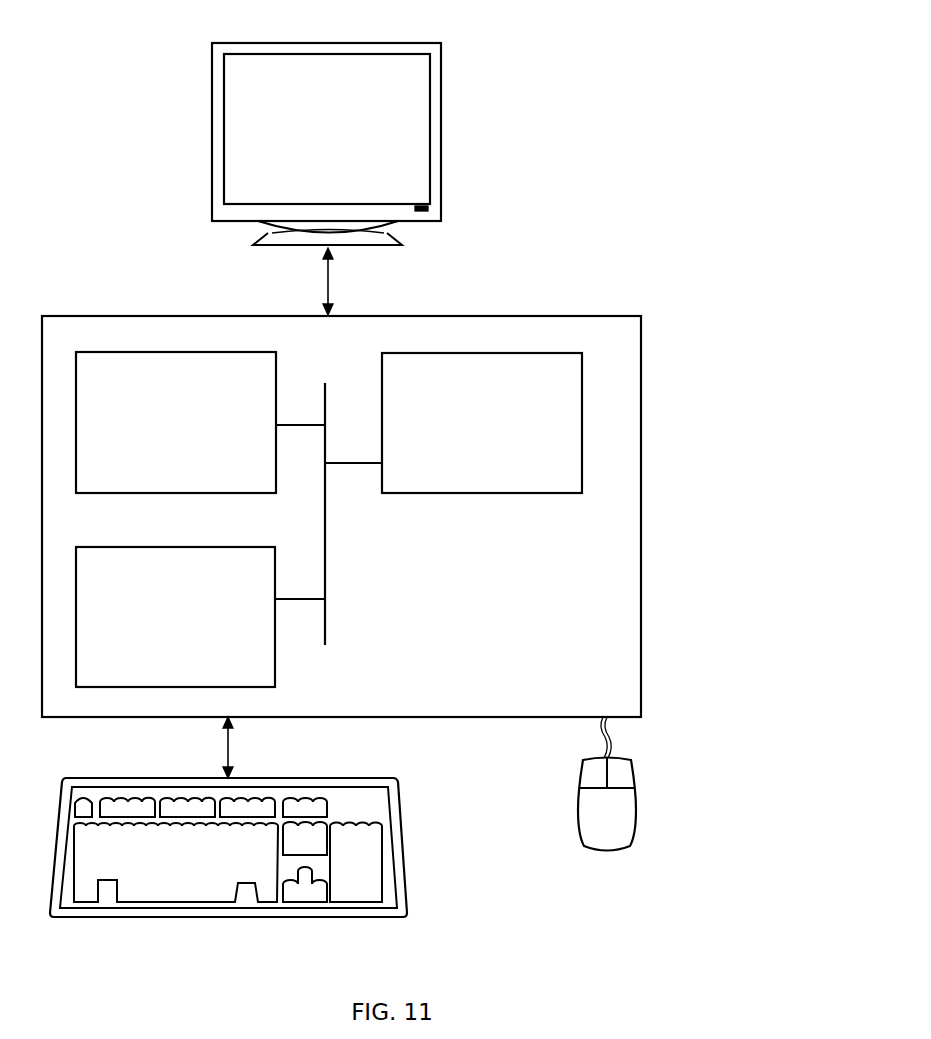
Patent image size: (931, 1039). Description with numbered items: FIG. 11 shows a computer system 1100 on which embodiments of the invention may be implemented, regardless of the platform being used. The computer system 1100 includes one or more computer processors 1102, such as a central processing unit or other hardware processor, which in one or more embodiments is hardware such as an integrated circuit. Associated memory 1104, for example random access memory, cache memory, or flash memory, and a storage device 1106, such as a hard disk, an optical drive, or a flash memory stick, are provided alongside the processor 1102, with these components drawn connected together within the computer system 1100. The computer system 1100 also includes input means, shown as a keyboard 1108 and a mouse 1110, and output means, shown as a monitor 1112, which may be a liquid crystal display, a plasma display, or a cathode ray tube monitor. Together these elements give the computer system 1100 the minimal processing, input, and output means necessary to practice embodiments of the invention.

The computer system 1100 is at (430, 488).
The computer processor 1102 is at (458, 407).
The memory 1104 is at (150, 422).
The storage device 1106 is at (151, 616).
The keyboard 1108 is at (149, 857).
The mouse 1110 is at (641, 859).
The monitor 1112 is at (303, 137).